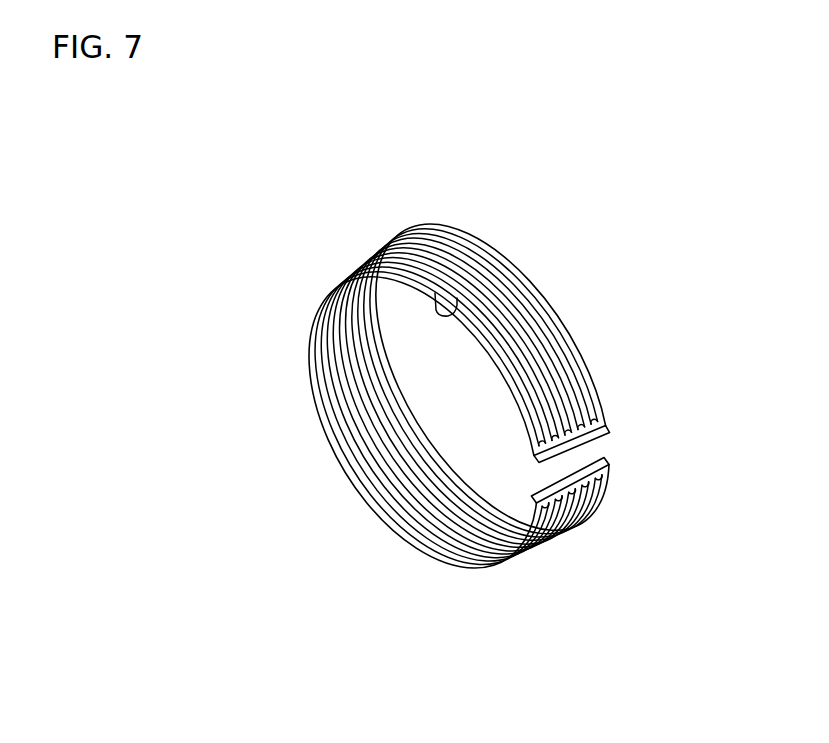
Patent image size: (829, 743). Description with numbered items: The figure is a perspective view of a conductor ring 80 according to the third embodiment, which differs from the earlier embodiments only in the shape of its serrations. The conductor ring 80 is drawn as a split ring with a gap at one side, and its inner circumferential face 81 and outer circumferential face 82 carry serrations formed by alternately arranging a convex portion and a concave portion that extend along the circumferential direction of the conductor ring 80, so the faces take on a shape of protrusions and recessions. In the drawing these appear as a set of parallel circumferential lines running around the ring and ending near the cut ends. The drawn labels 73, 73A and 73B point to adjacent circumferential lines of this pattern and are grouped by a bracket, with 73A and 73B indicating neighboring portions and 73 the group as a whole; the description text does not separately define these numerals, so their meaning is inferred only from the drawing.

The conductor ring 80 is at (340, 195).
The inner circumferential face 81 is at (451, 298).
The outer circumferential face 82 is at (530, 283).
The slits 73 is at (528, 397).
The first slit 73A is at (577, 355).
The second slit 73B is at (580, 386).